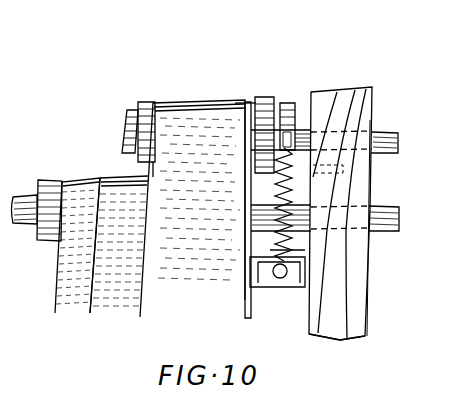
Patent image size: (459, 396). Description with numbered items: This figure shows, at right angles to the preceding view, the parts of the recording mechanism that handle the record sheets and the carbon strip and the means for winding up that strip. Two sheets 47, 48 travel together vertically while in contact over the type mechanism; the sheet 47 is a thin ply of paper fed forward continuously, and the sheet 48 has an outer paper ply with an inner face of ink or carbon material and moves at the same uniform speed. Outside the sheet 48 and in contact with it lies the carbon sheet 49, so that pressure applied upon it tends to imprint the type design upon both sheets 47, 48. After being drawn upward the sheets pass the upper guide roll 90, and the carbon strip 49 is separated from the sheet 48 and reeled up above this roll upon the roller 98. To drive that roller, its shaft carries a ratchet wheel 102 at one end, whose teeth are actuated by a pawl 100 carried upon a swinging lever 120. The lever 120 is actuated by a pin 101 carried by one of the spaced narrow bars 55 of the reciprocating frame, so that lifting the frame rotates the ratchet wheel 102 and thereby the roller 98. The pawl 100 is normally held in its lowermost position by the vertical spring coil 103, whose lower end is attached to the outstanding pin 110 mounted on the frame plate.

The sheet 47 is at (62, 273).
The sheet 48 is at (115, 296).
The carbon sheet 49 is at (184, 271).
The spaced narrow bars 55 is at (368, 306).
The upper guide roll 90 is at (50, 180).
The roller 98 is at (132, 108).
The pawl 100 is at (340, 197).
The pin 101 is at (296, 166).
The ratchet wheel 102 is at (264, 99).
The vertical spring coil 103 is at (288, 254).
The outstanding pin 110 is at (292, 279).
The swinging lever 120 is at (293, 103).